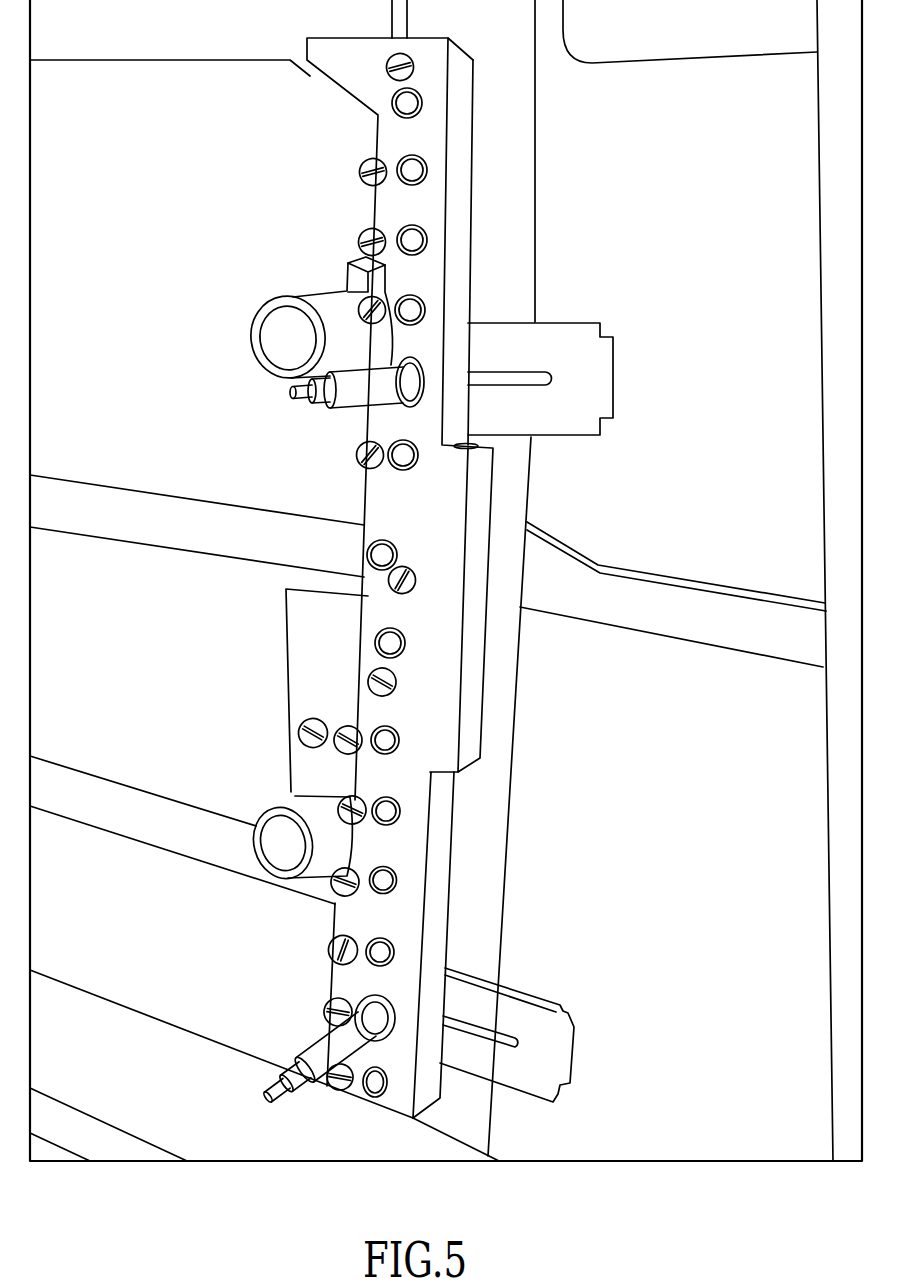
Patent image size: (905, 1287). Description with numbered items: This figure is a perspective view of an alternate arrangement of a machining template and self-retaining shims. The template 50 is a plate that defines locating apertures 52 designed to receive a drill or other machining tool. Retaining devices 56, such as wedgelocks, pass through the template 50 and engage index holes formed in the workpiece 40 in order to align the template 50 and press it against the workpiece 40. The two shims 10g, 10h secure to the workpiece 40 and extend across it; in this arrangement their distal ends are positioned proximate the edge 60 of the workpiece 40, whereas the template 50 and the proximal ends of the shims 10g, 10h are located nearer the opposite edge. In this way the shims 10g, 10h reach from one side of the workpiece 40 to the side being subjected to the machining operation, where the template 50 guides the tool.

The template 50 is at (435, 683).
The locating apertures 52 is at (393, 751).
The workpiece 40 is at (466, 879).
The edge 60 is at (503, 907).
The retaining devices 56 is at (394, 996).
The shim 10g is at (640, 363).
The shim 10h is at (589, 1059).